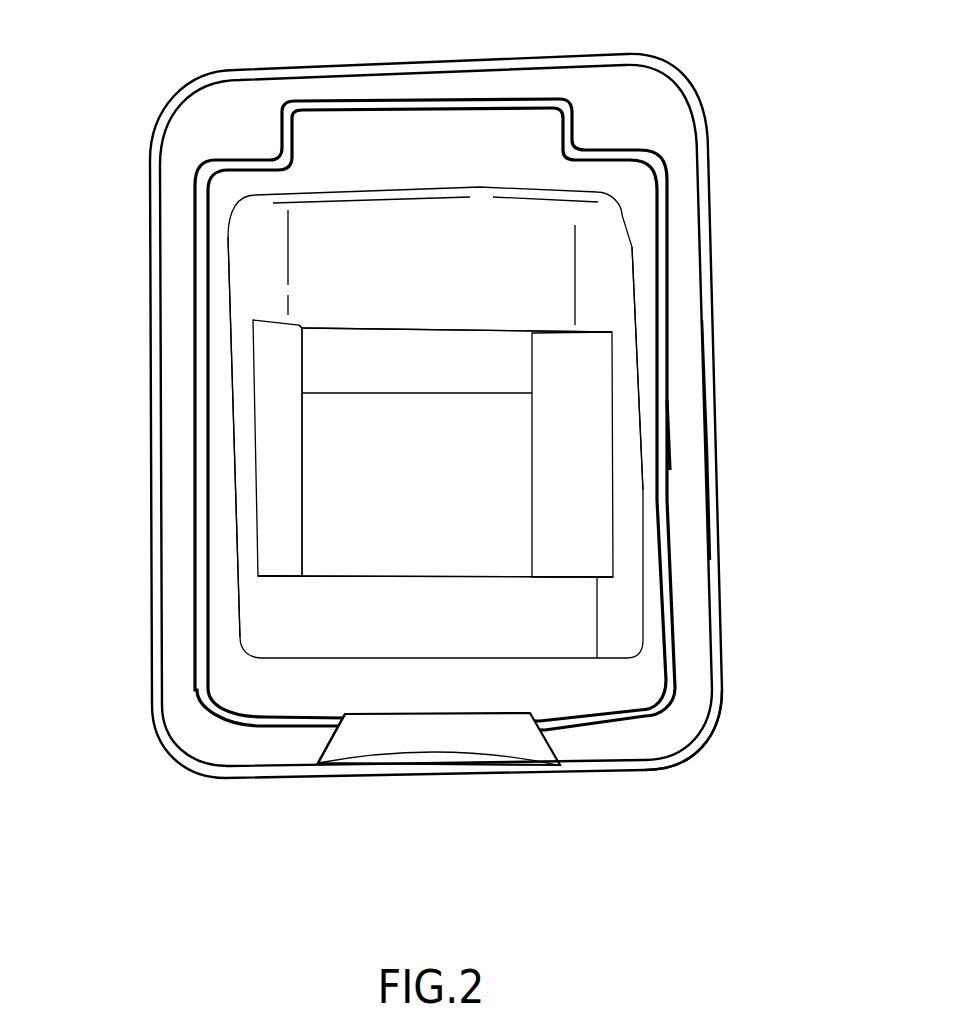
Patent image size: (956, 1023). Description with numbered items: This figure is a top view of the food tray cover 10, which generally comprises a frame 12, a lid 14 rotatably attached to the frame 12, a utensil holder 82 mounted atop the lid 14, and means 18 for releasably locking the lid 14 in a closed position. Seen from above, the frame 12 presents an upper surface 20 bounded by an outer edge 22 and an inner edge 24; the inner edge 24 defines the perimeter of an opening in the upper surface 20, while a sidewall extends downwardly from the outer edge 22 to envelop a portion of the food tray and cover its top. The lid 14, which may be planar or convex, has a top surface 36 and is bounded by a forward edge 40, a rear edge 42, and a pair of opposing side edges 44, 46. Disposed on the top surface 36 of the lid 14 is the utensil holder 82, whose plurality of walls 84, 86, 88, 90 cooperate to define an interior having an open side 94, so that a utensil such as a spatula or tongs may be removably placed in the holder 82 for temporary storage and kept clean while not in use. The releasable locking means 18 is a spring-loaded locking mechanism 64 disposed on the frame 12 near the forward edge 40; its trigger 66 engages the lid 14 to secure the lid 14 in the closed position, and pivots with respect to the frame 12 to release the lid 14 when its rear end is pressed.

The cover 10 is at (721, 161).
The frame 12 is at (628, 88).
The lid 14 is at (636, 318).
The means for releasably locking the lid 18 is at (508, 750).
The upper surface 20 is at (700, 388).
The outer edge 22 is at (697, 433).
The inner edge 24 is at (670, 461).
The top surface 36 is at (217, 441).
The forward edge 40 is at (638, 752).
The rear edge 42 is at (447, 100).
The side edge 44 is at (198, 318).
The side edge 46 is at (650, 257).
The spring-loaded locking mechanism 64 is at (437, 738).
The trigger 66 is at (362, 750).
The utensil holder 82 is at (313, 505).
The wall 84 is at (255, 398).
The wall 86 is at (435, 489).
The wall 88 is at (603, 520).
The wall 90 is at (412, 330).
The open side 94 is at (330, 577).